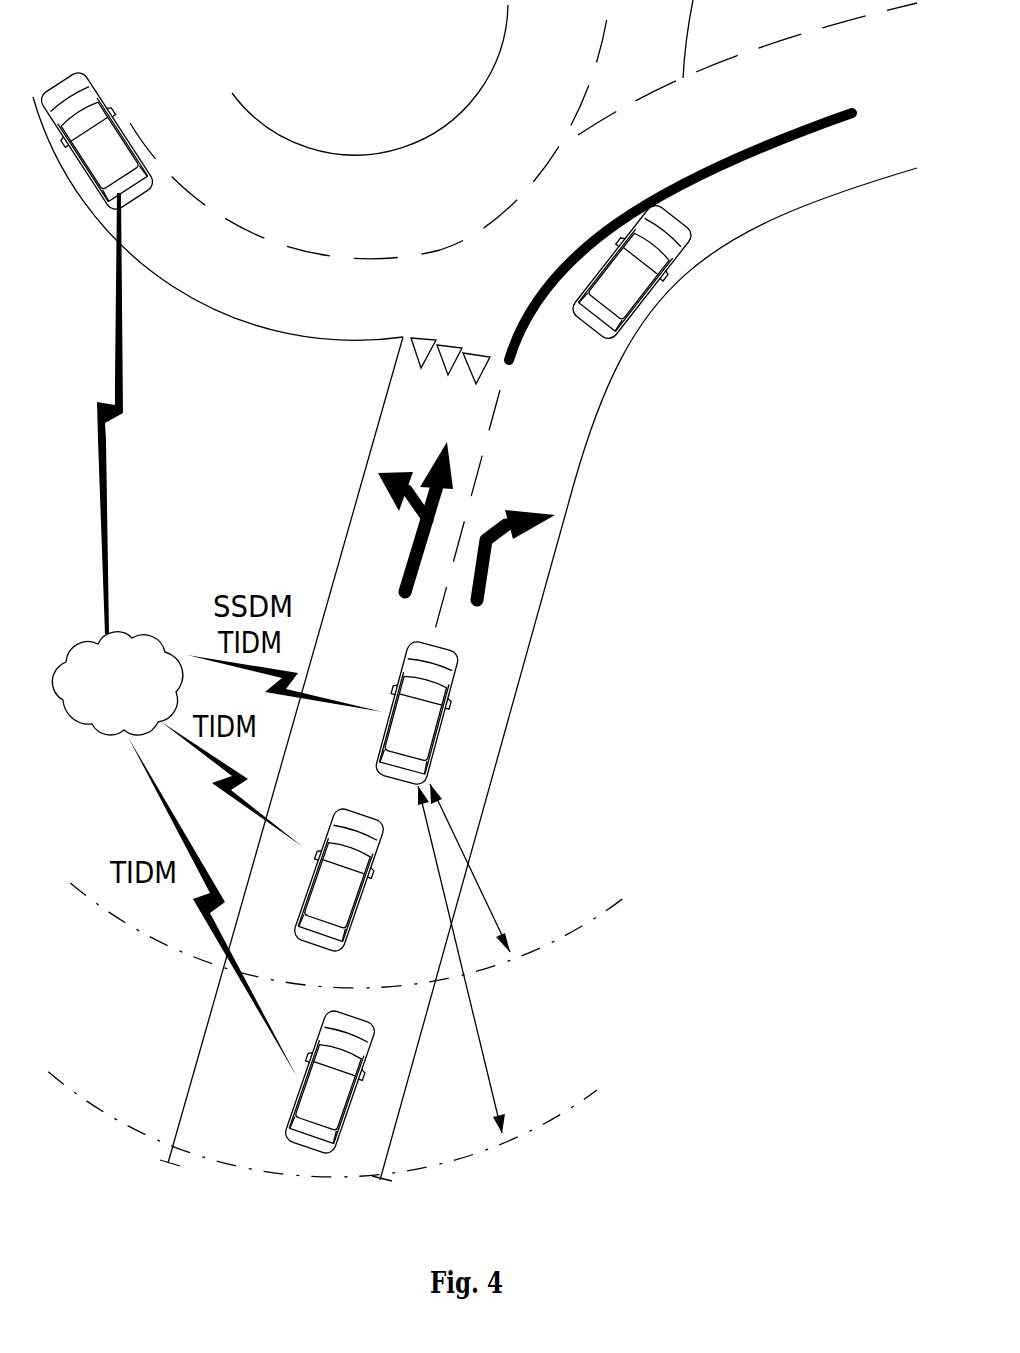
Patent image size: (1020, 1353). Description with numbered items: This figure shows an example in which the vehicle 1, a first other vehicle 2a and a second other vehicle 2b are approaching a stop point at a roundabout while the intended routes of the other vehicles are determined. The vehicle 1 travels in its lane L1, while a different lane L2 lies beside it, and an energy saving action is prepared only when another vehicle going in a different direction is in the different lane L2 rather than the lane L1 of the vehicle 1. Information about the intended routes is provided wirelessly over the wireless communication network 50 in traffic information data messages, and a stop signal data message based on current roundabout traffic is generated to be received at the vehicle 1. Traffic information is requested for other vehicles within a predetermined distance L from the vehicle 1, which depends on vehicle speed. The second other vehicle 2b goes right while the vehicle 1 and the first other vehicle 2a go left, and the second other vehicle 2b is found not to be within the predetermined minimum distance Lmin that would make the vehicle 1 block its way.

The vehicle 1 is at (460, 711).
The first other vehicle 2a is at (378, 890).
The second other vehicle 2b is at (280, 1104).
The wireless communication network 50 is at (117, 683).
The lane of the vehicle L1 is at (516, 508).
The different lane L2 is at (415, 492).
The predetermined minimum distance Lmin is at (486, 868).
The predetermined distance L is at (461, 959).